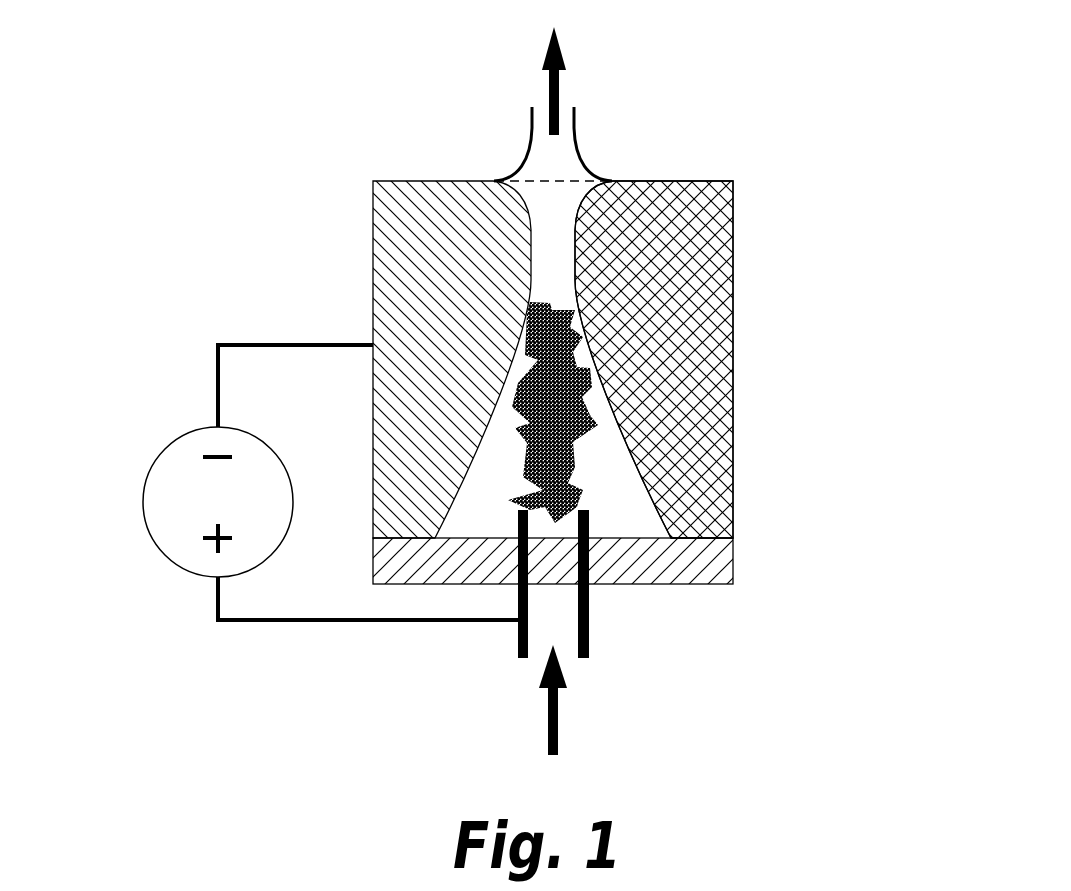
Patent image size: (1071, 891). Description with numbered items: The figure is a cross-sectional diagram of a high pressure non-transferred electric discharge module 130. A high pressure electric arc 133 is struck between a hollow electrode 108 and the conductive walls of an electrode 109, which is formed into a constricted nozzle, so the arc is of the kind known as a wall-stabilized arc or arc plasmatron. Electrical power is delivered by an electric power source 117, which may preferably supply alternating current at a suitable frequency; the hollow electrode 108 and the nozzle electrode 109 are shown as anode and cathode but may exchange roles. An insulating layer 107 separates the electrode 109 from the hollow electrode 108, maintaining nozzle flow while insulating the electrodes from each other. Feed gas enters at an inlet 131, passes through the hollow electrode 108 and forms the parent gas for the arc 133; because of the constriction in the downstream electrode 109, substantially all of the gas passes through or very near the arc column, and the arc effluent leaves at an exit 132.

The insulating layer 107 is at (695, 560).
The hollow electrode 108 is at (588, 615).
The electrode 109 is at (425, 283).
The electric power source 117 is at (132, 517).
The high pressure electric discharge module 130 is at (733, 255).
The inlet 131 is at (560, 710).
The exit 132 is at (568, 82).
The electric arc 133 is at (588, 412).